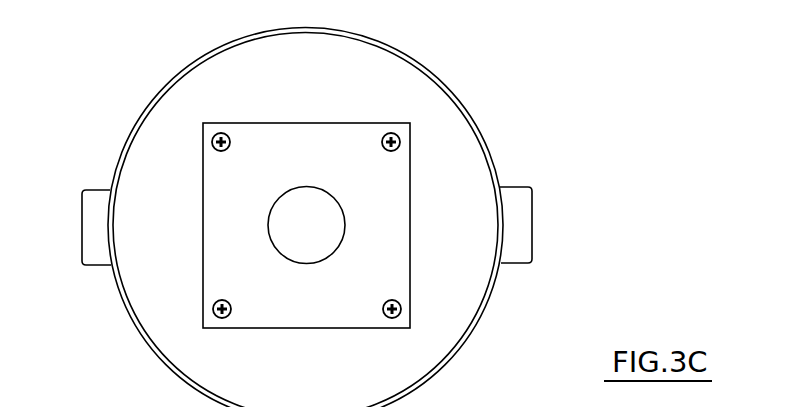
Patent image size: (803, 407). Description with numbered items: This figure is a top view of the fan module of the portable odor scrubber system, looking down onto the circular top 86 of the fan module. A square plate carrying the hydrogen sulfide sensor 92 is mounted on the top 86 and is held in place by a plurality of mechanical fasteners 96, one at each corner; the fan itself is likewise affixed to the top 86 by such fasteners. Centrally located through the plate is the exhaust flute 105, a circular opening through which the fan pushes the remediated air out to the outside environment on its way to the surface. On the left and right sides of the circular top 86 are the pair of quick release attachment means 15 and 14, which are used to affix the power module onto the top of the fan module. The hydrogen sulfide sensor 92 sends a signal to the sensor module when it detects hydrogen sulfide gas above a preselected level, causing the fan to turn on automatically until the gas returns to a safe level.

The top of fan module 86 is at (188, 105).
The hydrogen sulfide sensor 92 is at (350, 123).
The mechanical fasteners 96 is at (228, 137).
The exhaust flute 105 is at (345, 225).
The quick release attachment means 15 is at (108, 190).
The quick release attachment means 14 is at (510, 187).